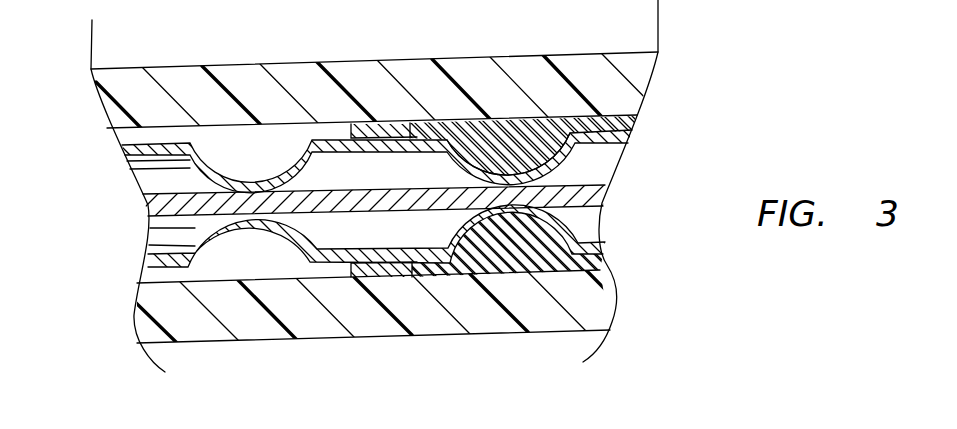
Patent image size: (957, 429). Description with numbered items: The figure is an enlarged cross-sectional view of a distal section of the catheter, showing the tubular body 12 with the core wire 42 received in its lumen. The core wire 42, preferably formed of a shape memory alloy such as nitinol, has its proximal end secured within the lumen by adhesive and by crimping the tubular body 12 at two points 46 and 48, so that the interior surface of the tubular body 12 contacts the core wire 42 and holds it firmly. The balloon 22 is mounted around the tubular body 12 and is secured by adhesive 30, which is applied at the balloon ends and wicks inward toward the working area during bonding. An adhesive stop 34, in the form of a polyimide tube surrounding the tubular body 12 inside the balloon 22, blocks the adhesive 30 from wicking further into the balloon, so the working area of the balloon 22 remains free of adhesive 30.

The tubular body 12 is at (139, 135).
The balloon 22 is at (480, 55).
The adhesive 30 is at (553, 130).
The adhesive stop 34 is at (362, 124).
The core wire 42 is at (583, 185).
The crimp point 46 is at (244, 160).
The crimp point 48 is at (507, 158).